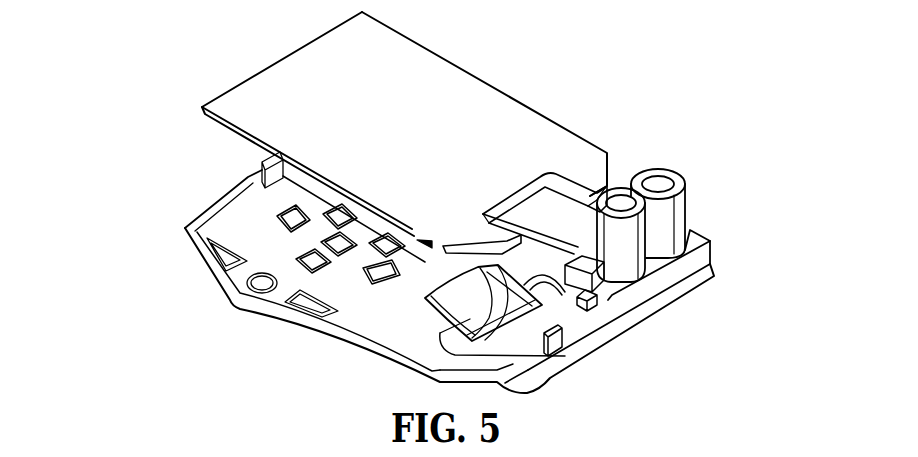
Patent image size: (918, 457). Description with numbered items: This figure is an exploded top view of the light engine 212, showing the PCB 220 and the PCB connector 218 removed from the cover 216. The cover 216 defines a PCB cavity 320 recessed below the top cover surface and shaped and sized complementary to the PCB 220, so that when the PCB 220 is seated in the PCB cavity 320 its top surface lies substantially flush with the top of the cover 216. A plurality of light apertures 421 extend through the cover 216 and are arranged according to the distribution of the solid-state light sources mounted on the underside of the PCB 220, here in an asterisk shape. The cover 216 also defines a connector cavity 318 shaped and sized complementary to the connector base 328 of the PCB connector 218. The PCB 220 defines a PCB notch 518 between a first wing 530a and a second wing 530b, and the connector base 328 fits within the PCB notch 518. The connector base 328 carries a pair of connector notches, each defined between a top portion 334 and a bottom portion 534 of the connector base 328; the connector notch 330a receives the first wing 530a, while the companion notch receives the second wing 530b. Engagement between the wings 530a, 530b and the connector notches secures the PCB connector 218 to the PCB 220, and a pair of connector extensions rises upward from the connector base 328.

The light engine 212 is at (162, 31).
The PCB 220 is at (506, 110).
The PCB notch 518 is at (499, 203).
The first wing 530a is at (483, 233).
The second wing 530b is at (591, 178).
The PCB cavity 320 is at (237, 222).
The light apertures 421 is at (388, 257).
The cover 216 is at (188, 229).
The connector cavity 318 is at (517, 362).
The connector base 328 is at (740, 237).
The PCB connector 218 is at (677, 283).
The top portion 334 is at (602, 278).
The connector notch 330a is at (597, 302).
The bottom portion 534 is at (600, 338).